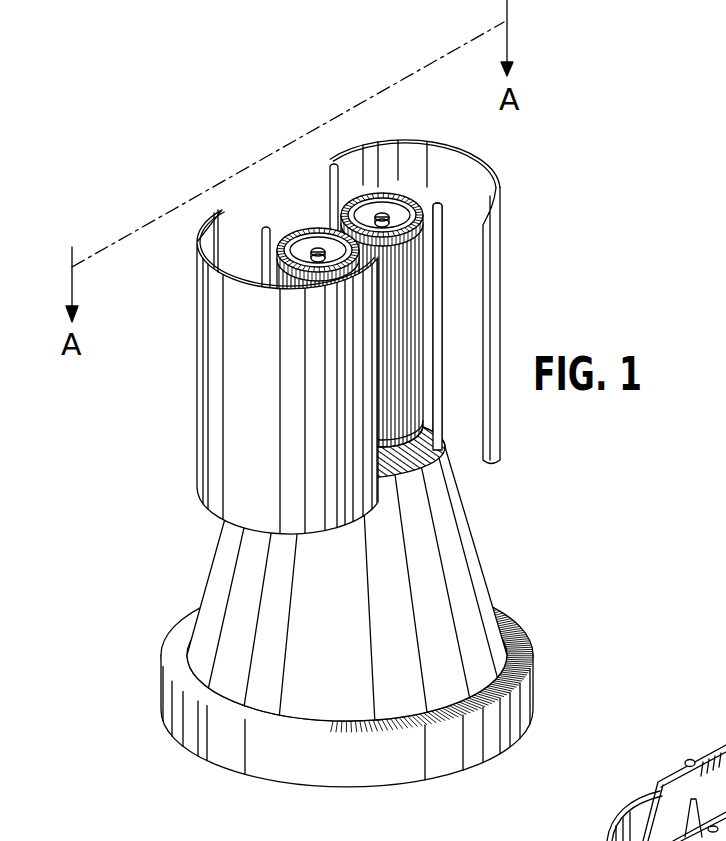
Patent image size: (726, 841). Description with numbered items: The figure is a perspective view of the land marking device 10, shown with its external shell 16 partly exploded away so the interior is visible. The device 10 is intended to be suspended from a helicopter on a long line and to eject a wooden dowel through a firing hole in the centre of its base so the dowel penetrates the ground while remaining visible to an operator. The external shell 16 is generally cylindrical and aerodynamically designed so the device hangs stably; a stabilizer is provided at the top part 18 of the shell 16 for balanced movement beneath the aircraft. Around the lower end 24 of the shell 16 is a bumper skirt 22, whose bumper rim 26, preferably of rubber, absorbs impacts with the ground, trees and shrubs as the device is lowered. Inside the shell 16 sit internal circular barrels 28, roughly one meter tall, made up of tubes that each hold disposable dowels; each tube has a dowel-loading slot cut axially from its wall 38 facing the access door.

The land marking device 10 is at (468, 552).
The external shell 16 is at (215, 375).
The top part 18 is at (607, 837).
The bumper skirt 22 is at (210, 553).
The lower end 24 is at (447, 448).
The bumper rim 26 is at (197, 733).
The internal circular barrel 28 is at (306, 228).
The wall 38 is at (420, 332).